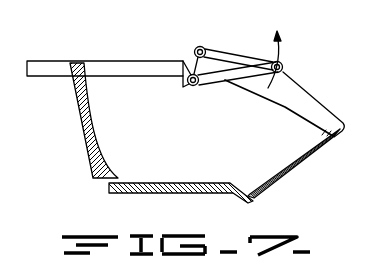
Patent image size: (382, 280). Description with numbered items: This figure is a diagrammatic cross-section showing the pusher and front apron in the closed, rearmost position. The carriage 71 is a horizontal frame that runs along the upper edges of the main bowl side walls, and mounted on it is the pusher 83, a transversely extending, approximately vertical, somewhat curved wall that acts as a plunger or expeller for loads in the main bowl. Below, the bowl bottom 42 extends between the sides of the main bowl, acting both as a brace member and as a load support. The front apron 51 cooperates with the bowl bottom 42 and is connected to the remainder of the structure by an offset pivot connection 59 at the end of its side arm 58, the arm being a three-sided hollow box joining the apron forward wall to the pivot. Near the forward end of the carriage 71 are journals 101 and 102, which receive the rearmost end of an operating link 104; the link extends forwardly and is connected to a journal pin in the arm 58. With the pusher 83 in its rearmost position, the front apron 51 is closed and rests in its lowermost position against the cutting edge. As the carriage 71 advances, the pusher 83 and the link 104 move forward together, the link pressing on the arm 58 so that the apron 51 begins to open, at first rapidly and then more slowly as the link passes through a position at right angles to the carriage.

The carriage 71 is at (132, 61).
The offset pivot connection 59 is at (206, 46).
The journal 101 is at (284, 67).
The journal 102 is at (188, 86).
The operating link 104 is at (224, 83).
The side arm 58 is at (312, 99).
The pusher 83 is at (98, 142).
The bowl bottom 42 is at (181, 182).
The front apron 51 is at (315, 157).